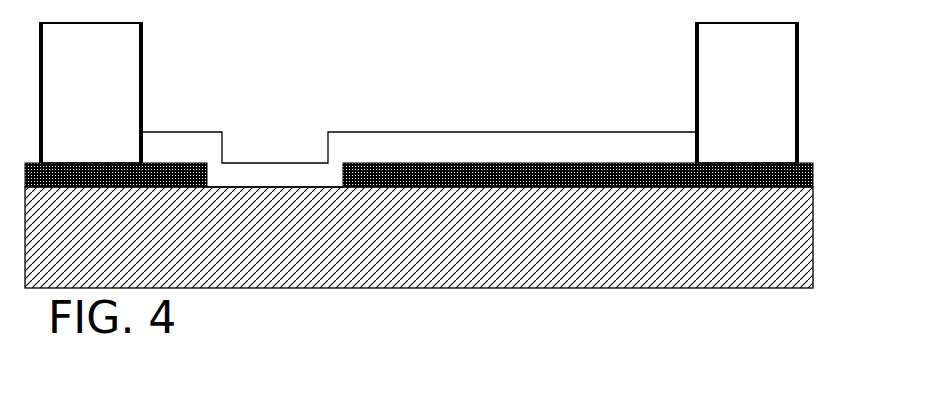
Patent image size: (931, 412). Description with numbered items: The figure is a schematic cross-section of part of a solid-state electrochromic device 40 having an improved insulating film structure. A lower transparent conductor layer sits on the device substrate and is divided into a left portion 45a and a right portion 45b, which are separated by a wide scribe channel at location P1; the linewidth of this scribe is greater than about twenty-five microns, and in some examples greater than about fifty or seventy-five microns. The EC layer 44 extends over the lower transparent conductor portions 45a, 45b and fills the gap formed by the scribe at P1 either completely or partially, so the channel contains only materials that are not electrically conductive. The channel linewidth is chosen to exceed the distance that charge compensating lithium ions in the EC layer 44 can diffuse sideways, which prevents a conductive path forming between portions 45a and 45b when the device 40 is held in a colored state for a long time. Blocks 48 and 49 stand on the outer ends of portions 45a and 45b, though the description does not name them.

The solid-state electrochromic device 40 is at (439, 362).
The EC layer 44 is at (419, 147).
The left portion of the lower transparent conductor layer 45a is at (116, 175).
The right portion of the lower transparent conductor layer 45b is at (578, 176).
The first conductive pillar 48 is at (78, 104).
The second conductive pillar 49 is at (735, 104).
The P1 scribe location P1 is at (275, 175).